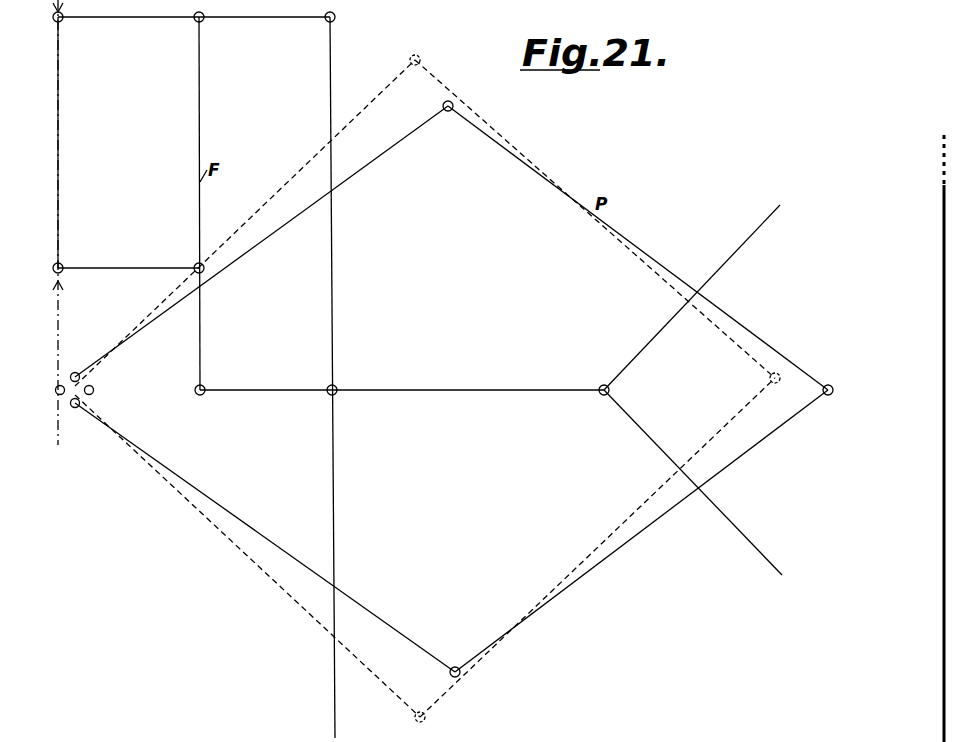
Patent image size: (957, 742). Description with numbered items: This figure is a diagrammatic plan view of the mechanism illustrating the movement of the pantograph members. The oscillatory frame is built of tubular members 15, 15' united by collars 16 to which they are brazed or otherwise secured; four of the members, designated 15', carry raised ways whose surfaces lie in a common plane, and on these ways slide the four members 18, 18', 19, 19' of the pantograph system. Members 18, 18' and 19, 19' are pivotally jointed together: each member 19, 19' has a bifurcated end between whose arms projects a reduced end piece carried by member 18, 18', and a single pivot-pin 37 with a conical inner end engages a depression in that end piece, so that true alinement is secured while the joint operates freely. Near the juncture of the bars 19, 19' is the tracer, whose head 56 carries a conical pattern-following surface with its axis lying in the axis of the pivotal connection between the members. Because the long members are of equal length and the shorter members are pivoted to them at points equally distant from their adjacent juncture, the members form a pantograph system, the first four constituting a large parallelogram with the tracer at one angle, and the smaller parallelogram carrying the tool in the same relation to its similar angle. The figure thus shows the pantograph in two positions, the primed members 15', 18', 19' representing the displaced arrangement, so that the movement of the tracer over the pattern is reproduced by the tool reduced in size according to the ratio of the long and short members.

The tubular member 15 is at (331, 203).
The tubular frame member with raised ways 15' is at (553, 375).
The collar 16 is at (201, 22).
The pantograph member 18 is at (261, 223).
The pantograph member 18' is at (265, 556).
The pantograph member 19 is at (621, 225).
The pantograph member 19' is at (624, 547).
The pivot-pin 37 is at (440, 387).
The head 56 is at (769, 378).